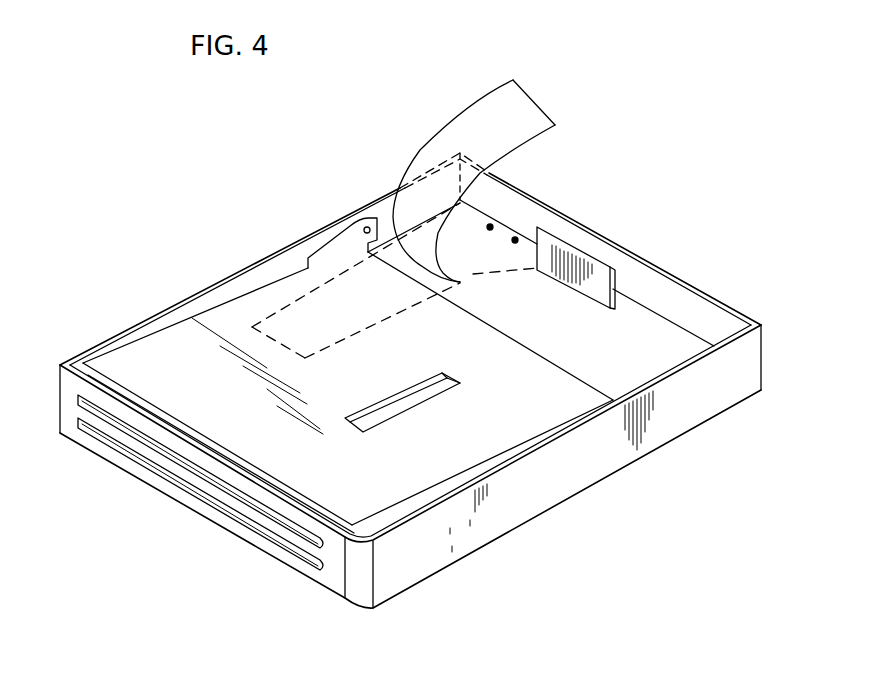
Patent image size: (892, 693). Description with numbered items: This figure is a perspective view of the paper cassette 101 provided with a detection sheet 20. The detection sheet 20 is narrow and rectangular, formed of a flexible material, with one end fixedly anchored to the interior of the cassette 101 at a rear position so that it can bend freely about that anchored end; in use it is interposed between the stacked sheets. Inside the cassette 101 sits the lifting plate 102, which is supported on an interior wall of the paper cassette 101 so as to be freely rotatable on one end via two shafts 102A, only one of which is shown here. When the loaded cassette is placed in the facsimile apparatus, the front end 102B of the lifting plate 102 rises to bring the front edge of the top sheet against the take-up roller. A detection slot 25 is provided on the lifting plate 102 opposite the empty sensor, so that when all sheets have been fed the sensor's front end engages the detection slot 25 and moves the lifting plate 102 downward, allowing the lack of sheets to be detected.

The paper cassette 101 is at (574, 496).
The lifting plate 102 is at (166, 353).
The shaft 102A is at (367, 226).
The front end of the lifting plate 102B is at (233, 424).
The detection sheet 20 is at (546, 110).
The detection slot 25 is at (400, 417).